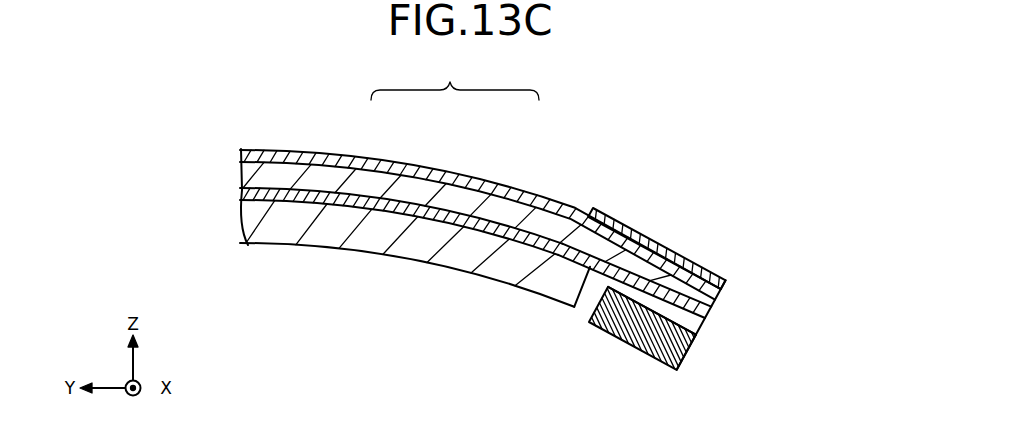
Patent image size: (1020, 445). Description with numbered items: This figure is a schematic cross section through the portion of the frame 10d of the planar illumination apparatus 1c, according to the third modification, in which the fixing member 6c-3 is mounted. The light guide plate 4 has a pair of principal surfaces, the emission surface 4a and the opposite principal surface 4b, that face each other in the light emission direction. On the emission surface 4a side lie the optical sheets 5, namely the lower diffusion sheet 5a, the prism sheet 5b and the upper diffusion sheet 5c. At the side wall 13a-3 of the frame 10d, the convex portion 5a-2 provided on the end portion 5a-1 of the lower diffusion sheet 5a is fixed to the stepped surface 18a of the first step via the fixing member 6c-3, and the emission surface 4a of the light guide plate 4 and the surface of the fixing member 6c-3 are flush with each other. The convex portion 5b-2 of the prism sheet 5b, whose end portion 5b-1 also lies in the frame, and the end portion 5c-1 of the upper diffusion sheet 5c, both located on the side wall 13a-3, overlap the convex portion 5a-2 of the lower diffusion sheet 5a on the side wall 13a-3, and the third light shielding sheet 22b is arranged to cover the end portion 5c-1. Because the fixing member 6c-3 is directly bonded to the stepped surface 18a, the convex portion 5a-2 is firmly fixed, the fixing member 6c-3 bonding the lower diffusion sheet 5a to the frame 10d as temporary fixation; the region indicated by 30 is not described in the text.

The planar illumination apparatus 1c is at (687, 120).
The light guide plate 4 is at (362, 243).
The emission surface 4a is at (318, 162).
The principal surface 4b is at (296, 248).
The optical sheets 5 is at (455, 79).
The lower diffusion sheet 5a is at (376, 190).
The prism sheet 5b is at (425, 190).
The upper diffusion sheet 5c is at (510, 129).
The end portion of the lower diffusion sheet 5a-1 is at (602, 273).
The convex portion of the lower diffusion sheet 5a-2 is at (697, 322).
The end portion of the prism sheet 5b-1 is at (597, 249).
The convex portion of the prism sheet 5b-2 is at (708, 305).
The end portion of the upper diffusion sheet 5c-1 is at (650, 252).
The fixing member 6c-3 is at (693, 333).
The frame 10d is at (647, 338).
The side wall 13a-3 is at (696, 369).
The stepped surface of the first step 18a is at (690, 260).
The third light shielding sheet 22b is at (633, 217).
The bent portion 30 is at (546, 176).